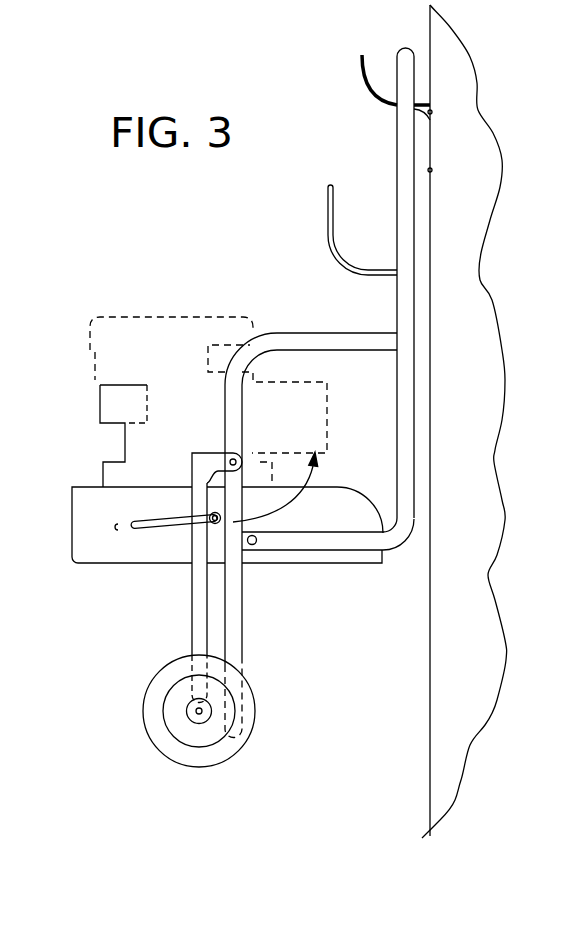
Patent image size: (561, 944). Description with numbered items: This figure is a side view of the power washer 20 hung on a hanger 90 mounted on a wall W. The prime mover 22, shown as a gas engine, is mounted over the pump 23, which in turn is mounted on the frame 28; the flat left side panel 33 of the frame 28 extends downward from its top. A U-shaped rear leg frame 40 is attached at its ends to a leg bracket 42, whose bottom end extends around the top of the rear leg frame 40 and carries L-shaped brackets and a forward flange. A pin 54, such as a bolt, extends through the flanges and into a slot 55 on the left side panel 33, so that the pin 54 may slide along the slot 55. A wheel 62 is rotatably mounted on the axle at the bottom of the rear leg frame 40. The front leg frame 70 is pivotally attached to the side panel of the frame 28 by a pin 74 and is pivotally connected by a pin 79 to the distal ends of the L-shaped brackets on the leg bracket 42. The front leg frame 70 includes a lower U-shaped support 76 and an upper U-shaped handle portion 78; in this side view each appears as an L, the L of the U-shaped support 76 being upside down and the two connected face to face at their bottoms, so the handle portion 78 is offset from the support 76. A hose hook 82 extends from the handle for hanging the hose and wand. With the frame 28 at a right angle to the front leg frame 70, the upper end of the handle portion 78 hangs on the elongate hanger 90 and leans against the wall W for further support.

The wall W is at (470, 113).
The power washer 20 is at (223, 280).
The prime mover 22 is at (115, 325).
The pump 23 is at (113, 470).
The frame 28 is at (87, 513).
The left side panel 33 is at (356, 527).
The rear leg frame 40 is at (195, 635).
The leg bracket 42 is at (197, 455).
The pin 54 is at (210, 523).
The slot 55 is at (143, 518).
The wheel 62 is at (255, 705).
The front leg frame 70 is at (322, 333).
The pin 74 is at (257, 545).
The U-shaped support 76 is at (240, 630).
The U-shaped handle portion 78 is at (398, 173).
The pin 79 is at (236, 462).
The hose hook 82 is at (328, 200).
The hanger 90 is at (392, 102).